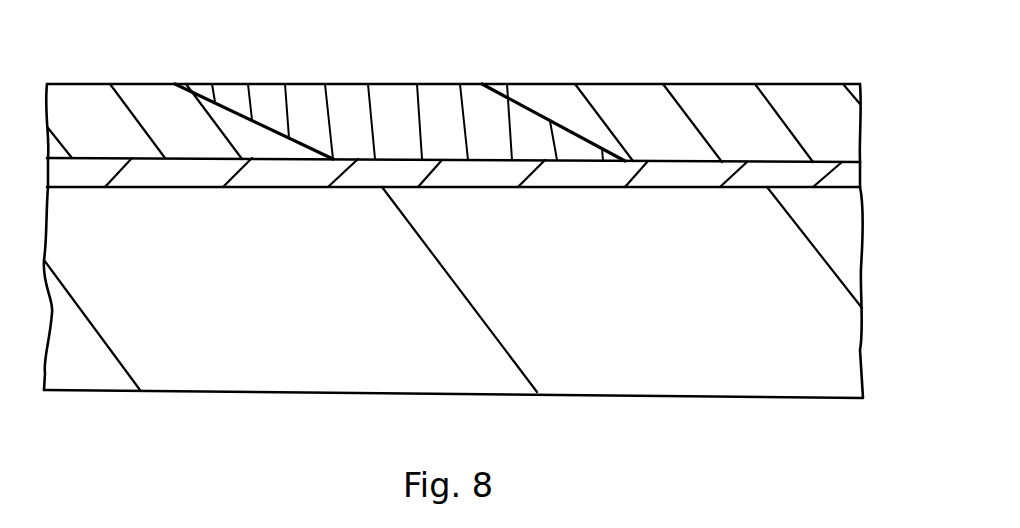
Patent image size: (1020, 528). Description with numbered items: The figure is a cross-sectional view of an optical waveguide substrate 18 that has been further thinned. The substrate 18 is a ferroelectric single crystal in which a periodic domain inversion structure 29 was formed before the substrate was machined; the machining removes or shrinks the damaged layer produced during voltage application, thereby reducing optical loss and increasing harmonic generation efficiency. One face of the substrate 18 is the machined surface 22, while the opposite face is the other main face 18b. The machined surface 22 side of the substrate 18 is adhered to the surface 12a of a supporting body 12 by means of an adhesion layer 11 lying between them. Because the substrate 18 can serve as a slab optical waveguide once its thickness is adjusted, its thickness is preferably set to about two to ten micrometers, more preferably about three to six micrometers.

The supporting body 12 is at (847, 268).
The surface of the supporting body 12a is at (362, 187).
The adhesion layer 11 is at (613, 175).
The machined surface 22 is at (712, 163).
The substrate 18 is at (845, 132).
The other main face 18b is at (715, 86).
The periodic domain inversion structure 29 is at (468, 103).